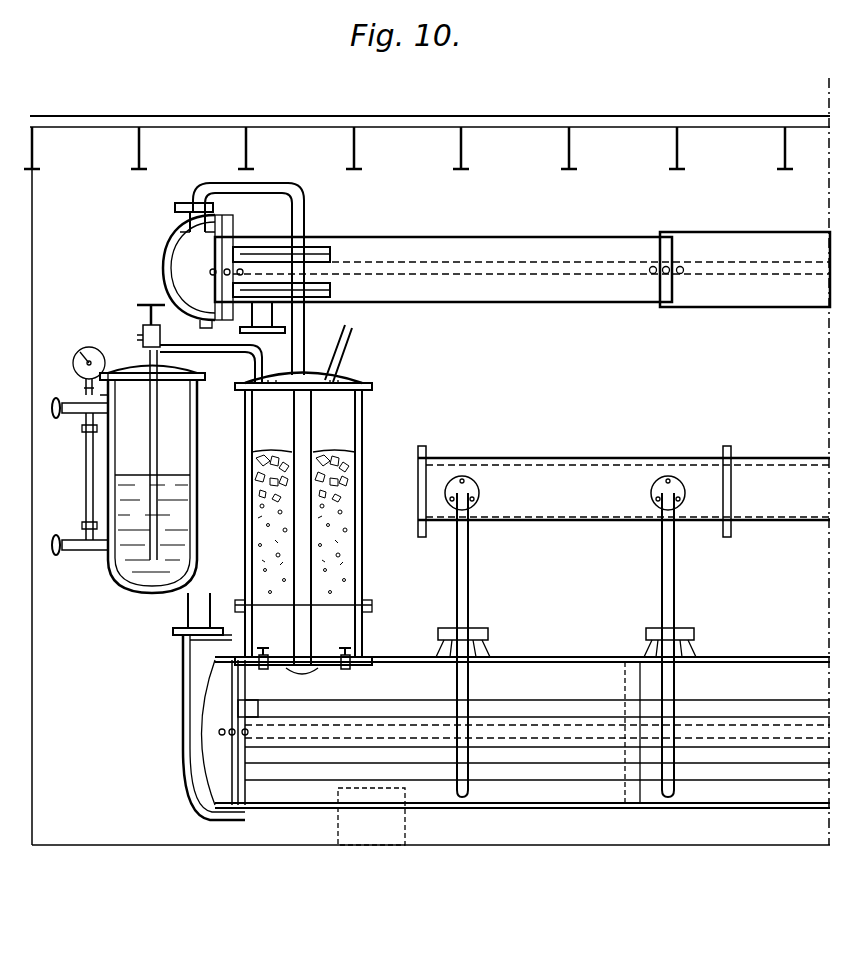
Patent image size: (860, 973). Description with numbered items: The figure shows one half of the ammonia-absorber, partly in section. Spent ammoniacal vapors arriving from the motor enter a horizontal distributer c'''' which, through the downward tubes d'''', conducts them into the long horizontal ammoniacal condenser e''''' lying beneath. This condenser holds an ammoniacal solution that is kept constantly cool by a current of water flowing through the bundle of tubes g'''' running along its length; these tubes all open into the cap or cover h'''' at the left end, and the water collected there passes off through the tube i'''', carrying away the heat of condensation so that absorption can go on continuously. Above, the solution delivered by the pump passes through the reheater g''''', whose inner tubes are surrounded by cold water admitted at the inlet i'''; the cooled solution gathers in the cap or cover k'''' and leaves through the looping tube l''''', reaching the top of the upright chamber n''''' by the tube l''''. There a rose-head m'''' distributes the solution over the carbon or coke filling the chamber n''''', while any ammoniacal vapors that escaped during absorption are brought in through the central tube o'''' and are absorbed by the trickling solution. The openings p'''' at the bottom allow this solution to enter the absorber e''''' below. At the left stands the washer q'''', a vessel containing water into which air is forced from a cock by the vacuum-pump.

The tube l''''' is at (208, 271).
The cap or cover k'''' is at (203, 265).
The cap or cover h'''' is at (256, 532).
The reheater g''''' is at (522, 278).
The tube i'''' is at (262, 329).
The tube l'''' is at (332, 353).
The washer q'''' is at (128, 470).
The rose-head m'''' is at (303, 524).
The chamber n''''' is at (305, 522).
The tube o'''' is at (311, 527).
The openings p'''' is at (306, 645).
The inlet i''' is at (198, 614).
The ammoniacal condenser (absorber) e''''' is at (522, 751).
The tubes g'''' is at (534, 739).
The distributer c'''' is at (624, 491).
The tubes d'''' is at (571, 636).